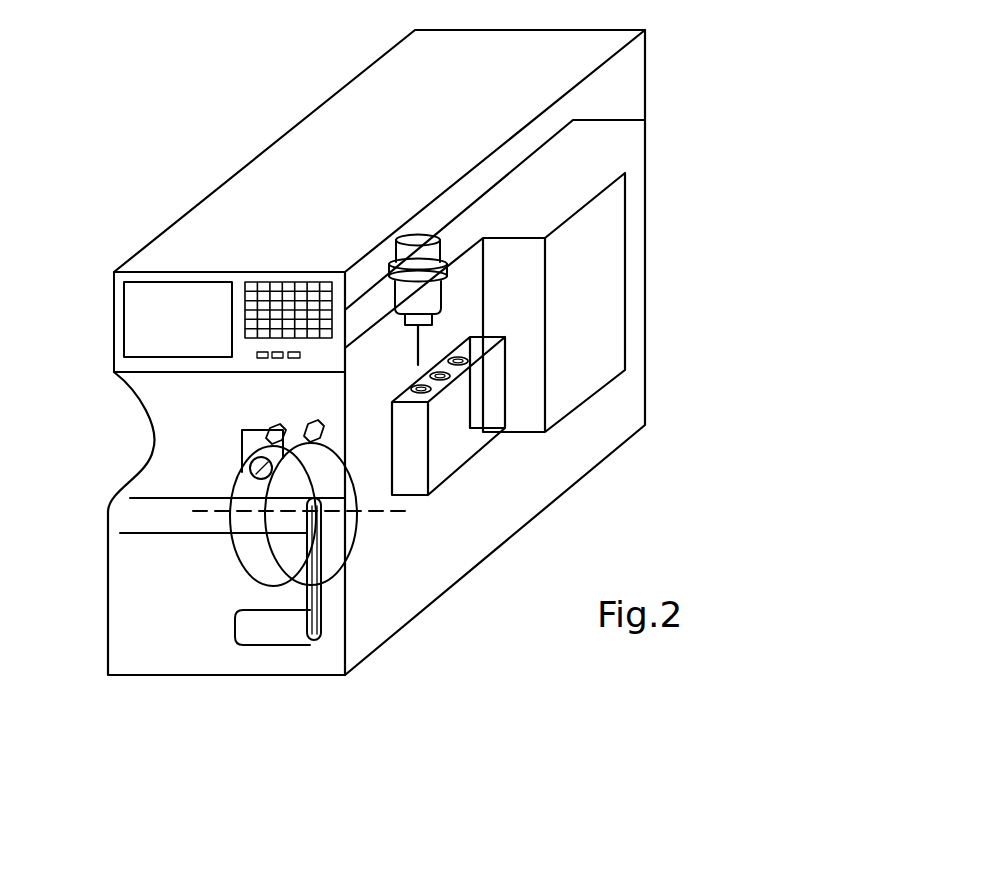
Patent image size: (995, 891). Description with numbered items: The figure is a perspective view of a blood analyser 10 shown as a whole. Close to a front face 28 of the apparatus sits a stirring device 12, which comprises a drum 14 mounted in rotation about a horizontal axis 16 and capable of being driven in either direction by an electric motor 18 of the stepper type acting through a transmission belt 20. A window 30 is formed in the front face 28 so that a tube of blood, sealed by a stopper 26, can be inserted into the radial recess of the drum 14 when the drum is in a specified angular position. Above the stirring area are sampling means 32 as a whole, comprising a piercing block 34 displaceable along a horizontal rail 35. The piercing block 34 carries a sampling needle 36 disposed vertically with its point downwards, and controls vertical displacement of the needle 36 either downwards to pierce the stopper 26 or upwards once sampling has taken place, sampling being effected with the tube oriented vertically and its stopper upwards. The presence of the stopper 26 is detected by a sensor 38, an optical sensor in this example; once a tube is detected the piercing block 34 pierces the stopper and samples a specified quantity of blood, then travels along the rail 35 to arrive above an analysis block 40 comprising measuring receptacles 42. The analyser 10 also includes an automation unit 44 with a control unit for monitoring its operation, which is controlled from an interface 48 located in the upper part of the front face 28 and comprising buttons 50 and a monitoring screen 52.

The blood analyser 10 is at (212, 135).
The stirring device 12 is at (372, 524).
The drum 14 is at (356, 548).
The horizontal axis 16 is at (207, 515).
The electric motor 18 is at (283, 648).
The transmission belt 20 is at (327, 604).
The stopper 26 is at (250, 470).
The front face 28 is at (137, 652).
The window 30 is at (243, 432).
The sampling means 32 is at (421, 228).
The piercing block 34 is at (443, 292).
The horizontal rail 35 is at (573, 136).
The sampling needle 36 is at (409, 356).
The sensor 38 is at (277, 427).
The analysis block 40 is at (463, 465).
The measuring receptacles 42 is at (438, 386).
The automation unit 44 is at (627, 233).
The interface 48 is at (138, 308).
The buttons 50 is at (292, 352).
The monitoring screen 52 is at (140, 333).